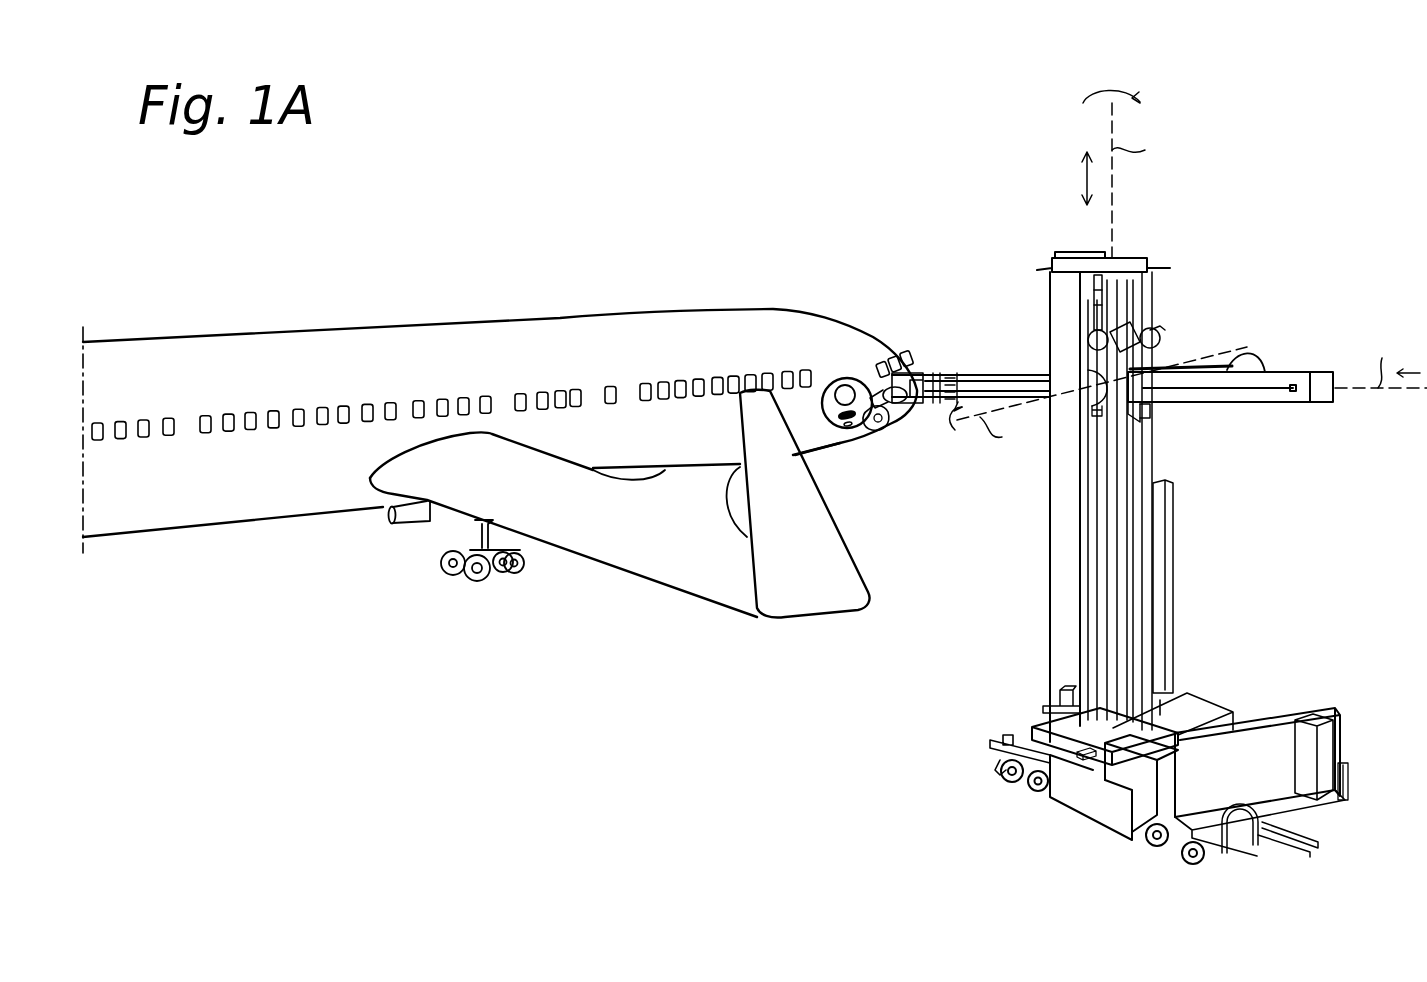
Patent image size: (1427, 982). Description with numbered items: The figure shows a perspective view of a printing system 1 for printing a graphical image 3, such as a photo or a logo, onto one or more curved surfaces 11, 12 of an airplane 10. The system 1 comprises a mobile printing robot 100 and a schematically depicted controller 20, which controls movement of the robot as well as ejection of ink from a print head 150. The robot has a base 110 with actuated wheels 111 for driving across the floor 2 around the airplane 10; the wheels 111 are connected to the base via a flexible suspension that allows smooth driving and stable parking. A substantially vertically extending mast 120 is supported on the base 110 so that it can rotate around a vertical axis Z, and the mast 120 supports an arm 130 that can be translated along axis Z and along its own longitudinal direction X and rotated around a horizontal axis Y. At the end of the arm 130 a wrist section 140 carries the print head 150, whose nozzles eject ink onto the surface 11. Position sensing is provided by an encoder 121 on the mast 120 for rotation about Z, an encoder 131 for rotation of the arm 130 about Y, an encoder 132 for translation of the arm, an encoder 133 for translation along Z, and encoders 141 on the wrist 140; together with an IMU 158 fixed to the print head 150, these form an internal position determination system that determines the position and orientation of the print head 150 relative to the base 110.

The printing system 1 is at (1258, 146).
The floor 2 is at (430, 676).
The image 3 is at (827, 397).
The airplane 10 is at (349, 300).
The curved 3D surface 11 is at (826, 441).
The curved 3D surface 12 is at (632, 537).
The controller 20 is at (1233, 703).
The mobile printing robot 100 is at (1213, 582).
The base 110 is at (1063, 820).
The actuated wheels 111 is at (1007, 780).
The mast 120 is at (1063, 573).
The encoder 121 is at (1066, 690).
The arm 130 is at (1267, 378).
The encoder 131 is at (1100, 382).
The encoder 132 is at (1130, 407).
The encoder 133 is at (1216, 430).
The wrist section 140 is at (913, 370).
The encoders 141 is at (907, 423).
The print head 150 is at (862, 420).
The IMU 158 is at (842, 387).